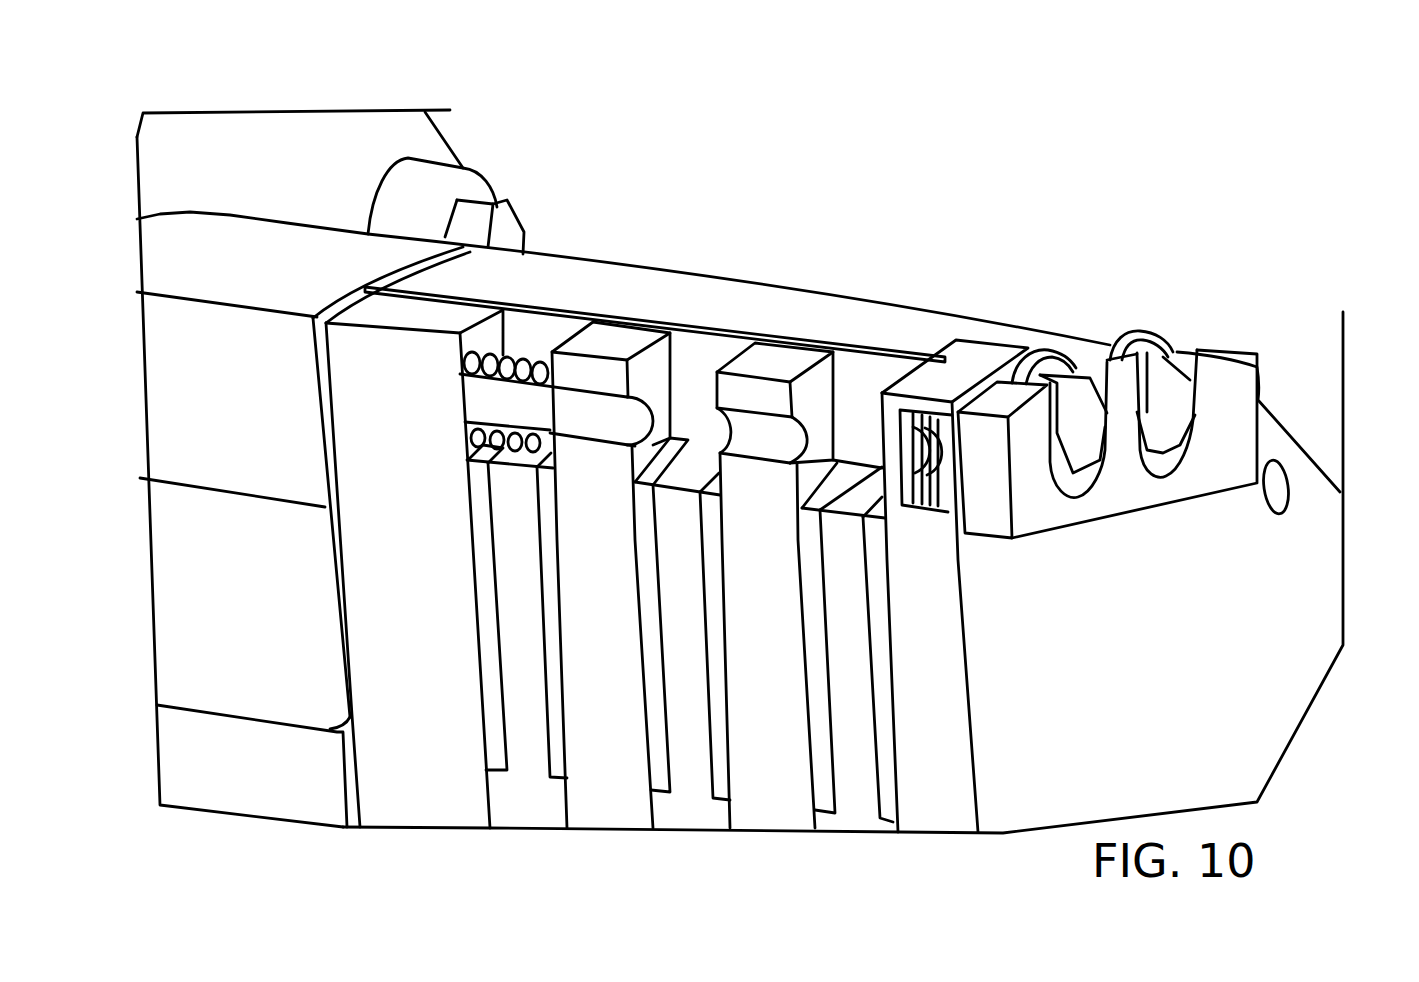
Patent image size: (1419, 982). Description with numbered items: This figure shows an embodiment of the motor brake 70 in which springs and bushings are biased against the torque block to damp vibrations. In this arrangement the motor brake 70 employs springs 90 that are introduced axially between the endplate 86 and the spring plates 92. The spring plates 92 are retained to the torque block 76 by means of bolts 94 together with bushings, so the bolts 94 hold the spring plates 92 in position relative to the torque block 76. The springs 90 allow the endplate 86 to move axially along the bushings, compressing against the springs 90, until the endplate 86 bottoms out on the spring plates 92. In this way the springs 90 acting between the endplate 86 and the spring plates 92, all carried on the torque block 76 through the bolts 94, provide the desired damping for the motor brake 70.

The motor brake 70 is at (572, 112).
The torque block 76 is at (712, 303).
The endplate 86 is at (1337, 492).
The springs 90 is at (913, 425).
The spring plates 92 is at (1227, 420).
The bolts 94 is at (1080, 420).